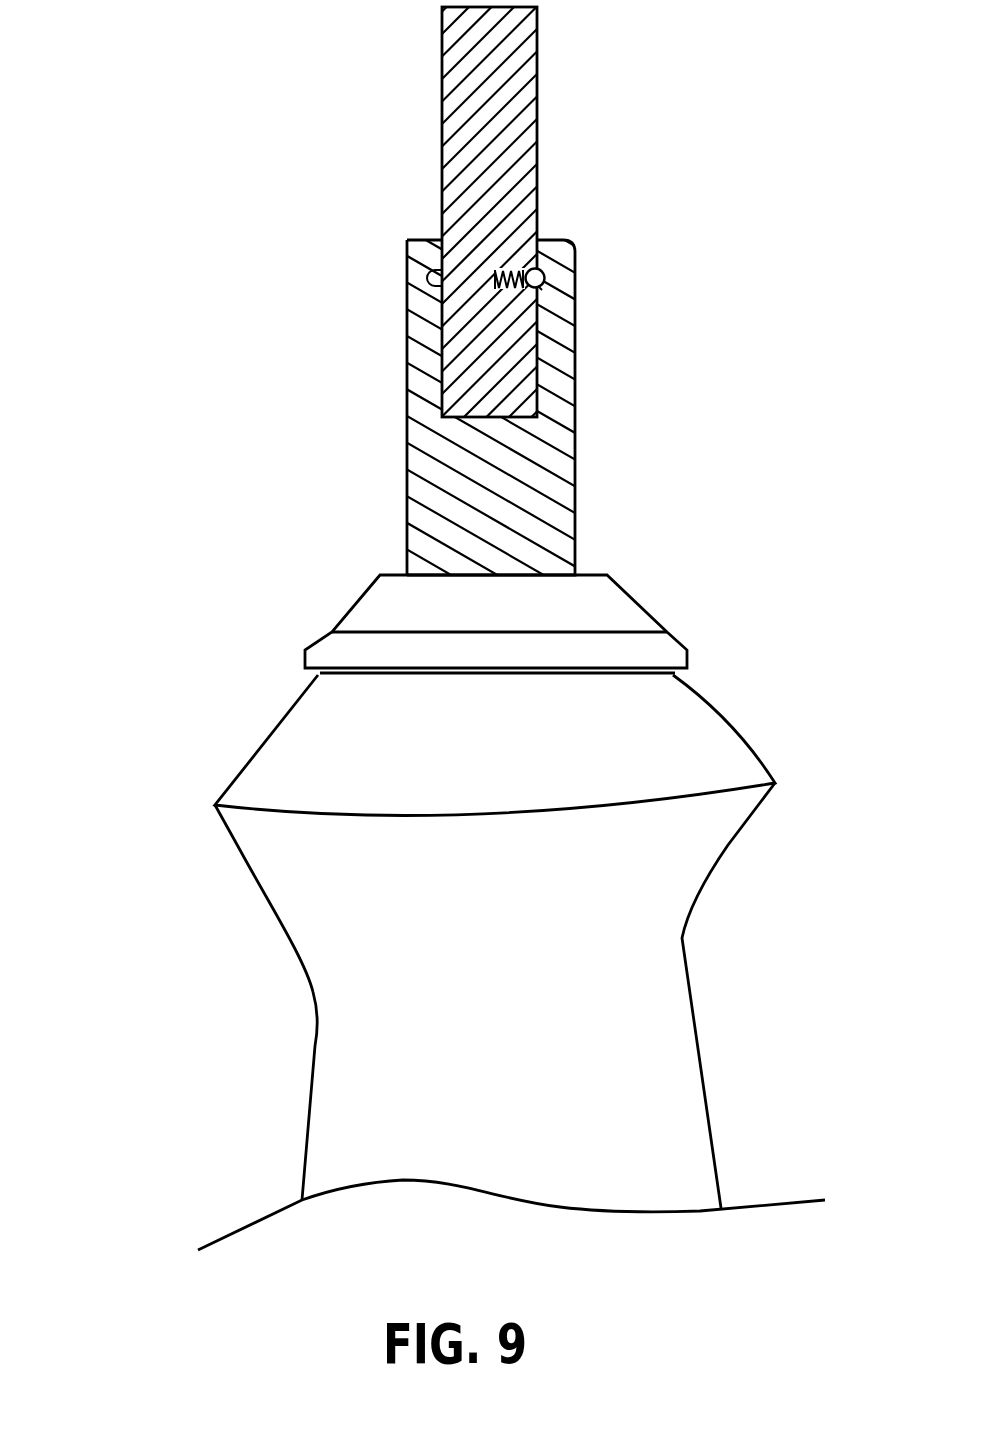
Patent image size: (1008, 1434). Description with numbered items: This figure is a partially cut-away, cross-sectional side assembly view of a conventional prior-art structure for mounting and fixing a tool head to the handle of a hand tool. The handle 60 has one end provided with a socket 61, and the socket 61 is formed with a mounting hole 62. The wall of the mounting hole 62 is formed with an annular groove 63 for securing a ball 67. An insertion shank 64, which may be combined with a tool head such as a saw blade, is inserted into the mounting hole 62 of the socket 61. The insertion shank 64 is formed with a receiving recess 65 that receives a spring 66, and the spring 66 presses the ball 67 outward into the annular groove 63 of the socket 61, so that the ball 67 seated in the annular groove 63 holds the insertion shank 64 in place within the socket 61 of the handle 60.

The handle 60 is at (380, 921).
The socket 61 is at (467, 457).
The mounting hole 62 is at (442, 360).
The annular groove 63 is at (540, 288).
The insertion shank 64 is at (488, 133).
The receiving recess 65 is at (497, 272).
The spring 66 is at (538, 238).
The ball 67 is at (547, 278).